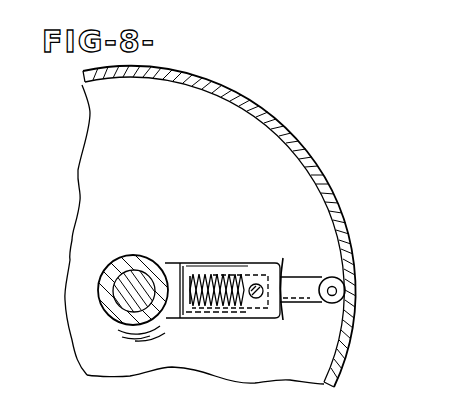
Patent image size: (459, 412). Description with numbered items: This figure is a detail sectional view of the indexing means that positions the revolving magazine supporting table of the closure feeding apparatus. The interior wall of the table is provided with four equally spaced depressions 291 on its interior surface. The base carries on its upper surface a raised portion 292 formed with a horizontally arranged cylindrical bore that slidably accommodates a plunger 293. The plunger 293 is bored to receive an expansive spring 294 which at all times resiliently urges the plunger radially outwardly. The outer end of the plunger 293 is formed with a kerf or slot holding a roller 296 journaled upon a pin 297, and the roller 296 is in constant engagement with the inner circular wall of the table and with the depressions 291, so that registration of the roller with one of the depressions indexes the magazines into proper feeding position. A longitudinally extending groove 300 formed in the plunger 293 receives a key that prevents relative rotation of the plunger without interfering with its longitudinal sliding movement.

The depressions 291 is at (136, 75).
The raised portion 292 is at (197, 266).
The plunger 293 is at (281, 275).
The expansive spring 294 is at (199, 303).
The roller 296 is at (337, 268).
The pin 297 is at (327, 298).
The groove 300 is at (260, 284).